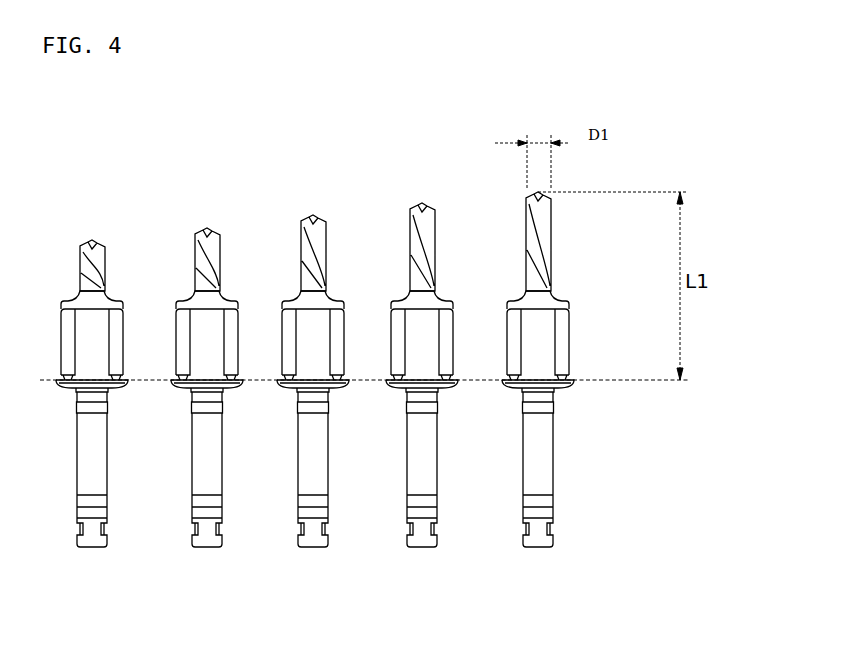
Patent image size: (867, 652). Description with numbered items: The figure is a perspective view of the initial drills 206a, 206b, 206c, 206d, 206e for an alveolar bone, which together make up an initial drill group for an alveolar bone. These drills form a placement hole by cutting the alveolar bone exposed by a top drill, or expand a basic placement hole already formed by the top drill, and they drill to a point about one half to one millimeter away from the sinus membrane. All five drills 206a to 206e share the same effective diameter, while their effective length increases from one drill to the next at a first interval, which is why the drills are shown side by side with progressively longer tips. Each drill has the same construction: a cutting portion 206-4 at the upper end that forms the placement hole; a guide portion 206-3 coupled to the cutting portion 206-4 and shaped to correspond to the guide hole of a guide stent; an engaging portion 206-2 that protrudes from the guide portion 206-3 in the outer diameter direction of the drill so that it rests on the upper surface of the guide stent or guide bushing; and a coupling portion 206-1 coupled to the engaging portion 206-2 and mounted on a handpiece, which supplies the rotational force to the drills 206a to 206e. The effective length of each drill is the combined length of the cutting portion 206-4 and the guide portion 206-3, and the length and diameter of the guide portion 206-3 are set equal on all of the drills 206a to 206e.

The initial drill for an alveolar bone 206a is at (95, 548).
The initial drill for an alveolar bone 206b is at (210, 548).
The initial drill for an alveolar bone 206c is at (316, 548).
The initial drill for an alveolar bone 206d is at (425, 548).
The initial drill for an alveolar bone 206e is at (591, 401).
The coupling portion 206-1 is at (543, 482).
The engaging portion 206-2 is at (575, 383).
The guide portion 206-3 is at (563, 338).
The cutting portion 206-4 is at (538, 235).